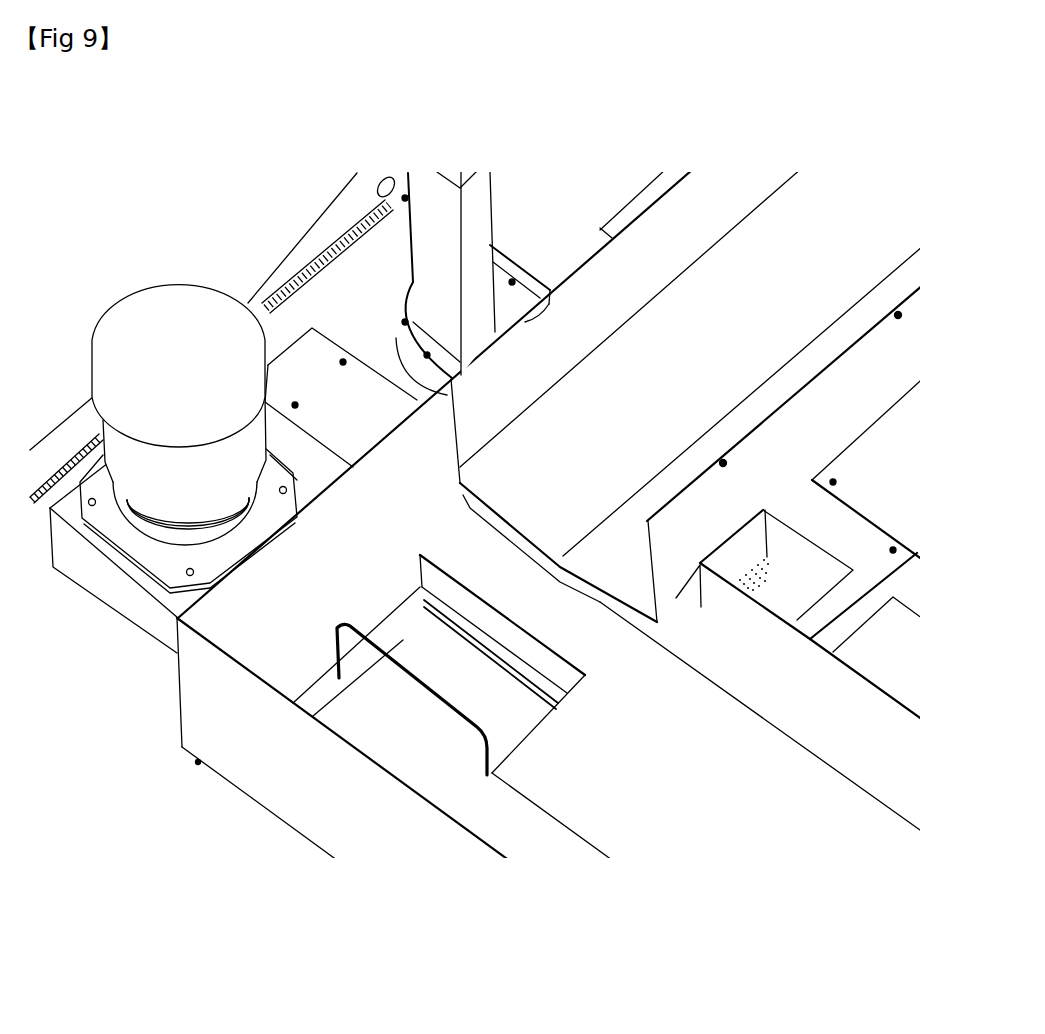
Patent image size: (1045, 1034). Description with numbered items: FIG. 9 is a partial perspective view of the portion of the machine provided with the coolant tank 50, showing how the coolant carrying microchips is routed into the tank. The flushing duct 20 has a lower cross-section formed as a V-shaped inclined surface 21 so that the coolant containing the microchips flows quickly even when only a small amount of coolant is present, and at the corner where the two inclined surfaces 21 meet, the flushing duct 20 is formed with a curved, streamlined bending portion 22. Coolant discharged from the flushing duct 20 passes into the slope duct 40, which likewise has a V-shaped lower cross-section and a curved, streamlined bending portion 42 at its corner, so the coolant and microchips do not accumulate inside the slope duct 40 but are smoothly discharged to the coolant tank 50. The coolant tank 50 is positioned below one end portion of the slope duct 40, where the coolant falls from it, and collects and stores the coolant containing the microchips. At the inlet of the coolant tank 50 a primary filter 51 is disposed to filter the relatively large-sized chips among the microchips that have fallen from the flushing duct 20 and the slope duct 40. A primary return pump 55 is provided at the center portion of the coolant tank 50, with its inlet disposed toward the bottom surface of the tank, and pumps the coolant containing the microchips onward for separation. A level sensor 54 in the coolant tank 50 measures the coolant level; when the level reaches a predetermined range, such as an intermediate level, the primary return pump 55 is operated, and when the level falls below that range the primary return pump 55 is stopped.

The flushing duct 20 is at (600, 275).
The V-shaped inclined surface 21 is at (772, 250).
The streamlined bending portion 22 is at (860, 297).
The slope duct 40 is at (420, 860).
The streamlined bending portion 42 is at (583, 837).
The coolant tank 50 is at (108, 590).
The primary filter 51 is at (383, 737).
The level sensor 54 is at (417, 230).
The primary return pump 55 is at (120, 342).